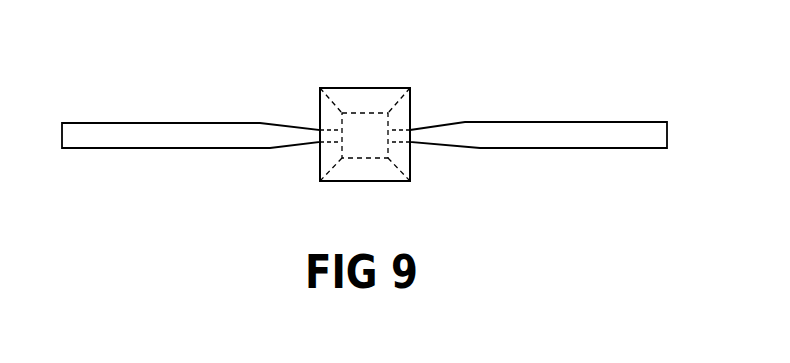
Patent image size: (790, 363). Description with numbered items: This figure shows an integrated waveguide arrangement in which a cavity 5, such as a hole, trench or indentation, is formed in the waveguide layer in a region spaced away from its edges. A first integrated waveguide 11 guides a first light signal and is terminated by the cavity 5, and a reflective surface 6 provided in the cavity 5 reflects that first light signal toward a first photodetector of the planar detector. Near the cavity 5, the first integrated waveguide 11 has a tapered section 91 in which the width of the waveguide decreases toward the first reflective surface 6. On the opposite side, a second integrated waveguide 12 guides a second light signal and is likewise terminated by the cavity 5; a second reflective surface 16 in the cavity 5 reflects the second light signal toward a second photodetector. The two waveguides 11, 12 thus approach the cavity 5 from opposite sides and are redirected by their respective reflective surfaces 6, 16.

The cavity 5 is at (410, 88).
The reflective surface 6 is at (320, 117).
The second reflective surface 16 is at (410, 117).
The first integrated waveguide 11 is at (155, 125).
The second integrated waveguide 12 is at (590, 122).
The tapered section 91 is at (293, 160).